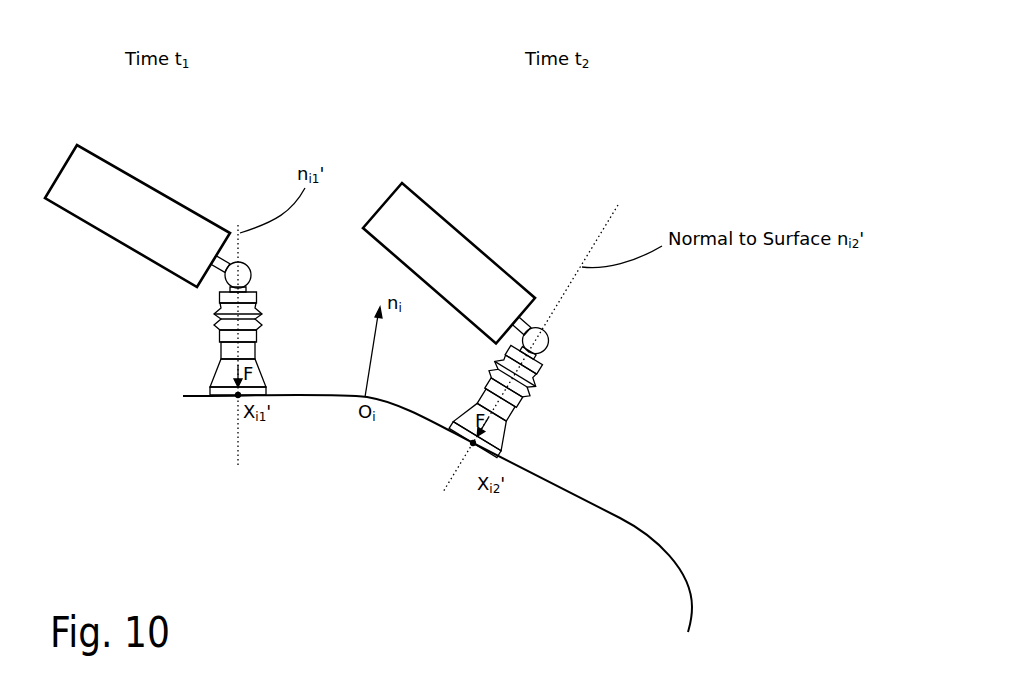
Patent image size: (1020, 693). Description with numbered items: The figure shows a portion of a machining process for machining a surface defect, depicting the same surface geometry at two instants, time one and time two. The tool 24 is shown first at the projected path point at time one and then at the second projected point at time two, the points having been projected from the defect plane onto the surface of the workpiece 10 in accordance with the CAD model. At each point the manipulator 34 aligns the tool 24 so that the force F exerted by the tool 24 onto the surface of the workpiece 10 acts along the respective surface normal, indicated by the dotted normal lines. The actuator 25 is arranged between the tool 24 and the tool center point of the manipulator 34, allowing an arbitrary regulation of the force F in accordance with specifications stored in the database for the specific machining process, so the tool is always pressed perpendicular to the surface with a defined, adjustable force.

The manipulator 34 is at (152, 217).
The actuator 25 is at (213, 318).
The tool 24 is at (212, 377).
The workpiece 10 is at (623, 518).